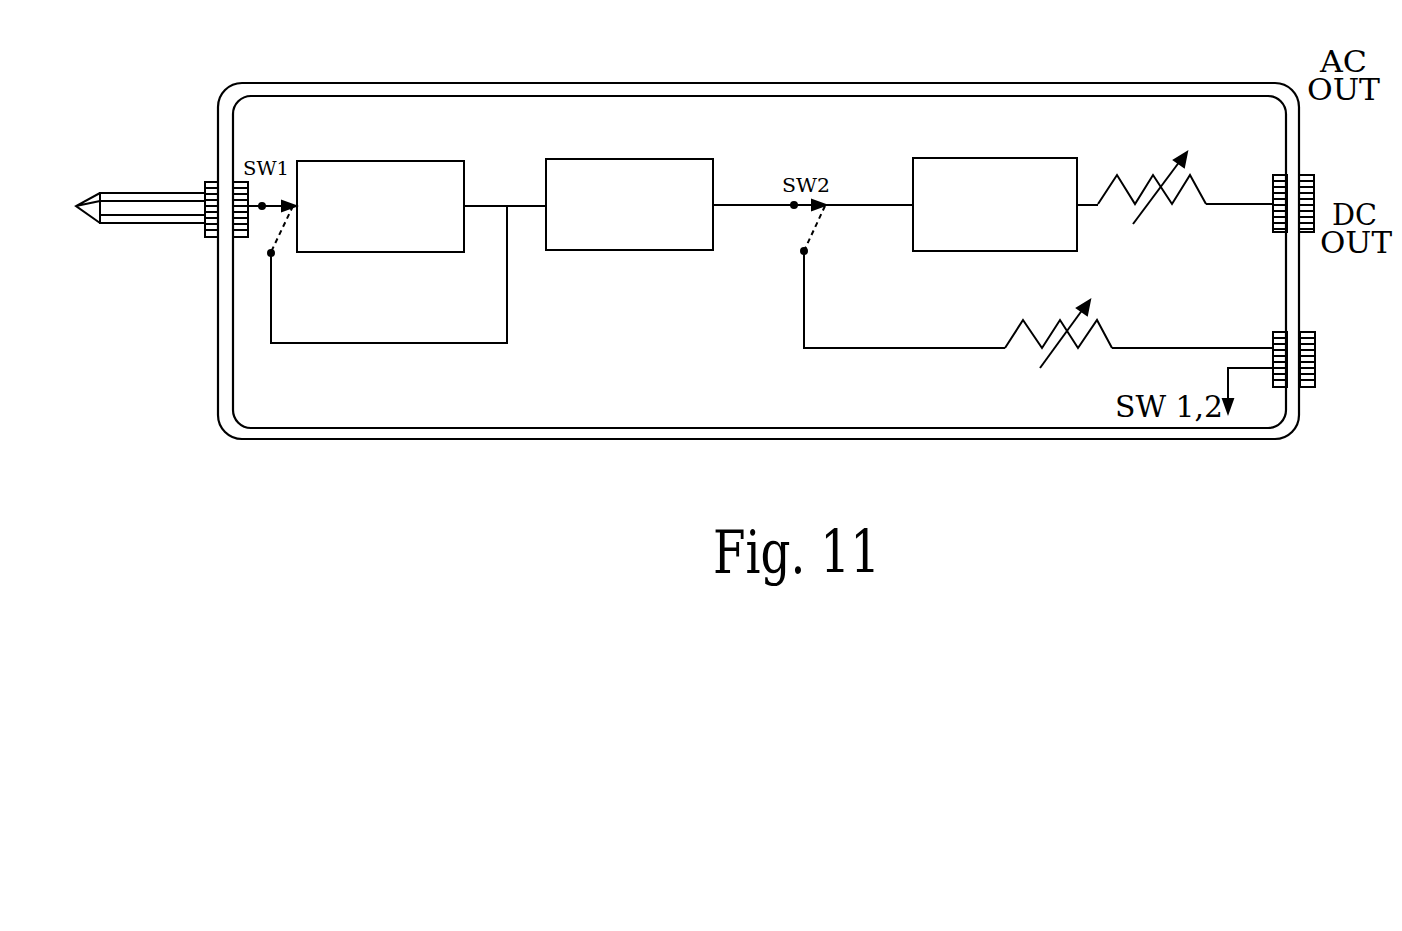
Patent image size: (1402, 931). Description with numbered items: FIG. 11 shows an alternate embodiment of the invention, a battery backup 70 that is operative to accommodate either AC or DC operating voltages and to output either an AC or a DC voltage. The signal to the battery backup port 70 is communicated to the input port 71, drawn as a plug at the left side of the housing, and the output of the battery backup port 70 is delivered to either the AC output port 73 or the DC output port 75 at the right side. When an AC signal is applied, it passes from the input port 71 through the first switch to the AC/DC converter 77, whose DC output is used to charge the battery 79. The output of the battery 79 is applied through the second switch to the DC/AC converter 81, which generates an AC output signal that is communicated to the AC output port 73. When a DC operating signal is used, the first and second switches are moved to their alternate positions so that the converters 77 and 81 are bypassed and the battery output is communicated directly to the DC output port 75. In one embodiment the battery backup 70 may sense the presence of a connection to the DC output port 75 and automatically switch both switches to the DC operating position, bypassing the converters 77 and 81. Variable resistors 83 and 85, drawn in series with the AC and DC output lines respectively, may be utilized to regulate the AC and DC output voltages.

The battery backup port 70 is at (797, 49).
The input port 71 is at (198, 228).
The AC output port 73 is at (1307, 177).
The DC output port 75 is at (1303, 333).
The AC/DC converter 77 is at (370, 253).
The battery 79 is at (630, 250).
The DC/AC converter 81 is at (983, 251).
The variable resistor 83 is at (1200, 191).
The variable resistor 85 is at (1105, 330).